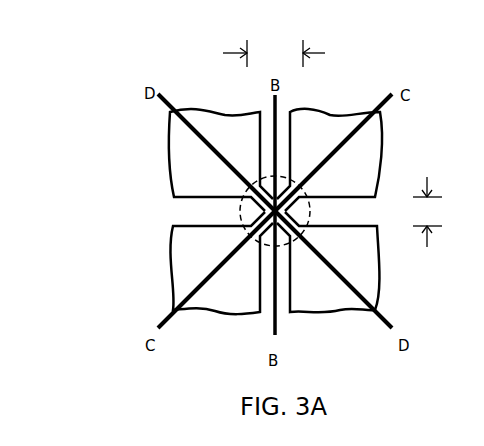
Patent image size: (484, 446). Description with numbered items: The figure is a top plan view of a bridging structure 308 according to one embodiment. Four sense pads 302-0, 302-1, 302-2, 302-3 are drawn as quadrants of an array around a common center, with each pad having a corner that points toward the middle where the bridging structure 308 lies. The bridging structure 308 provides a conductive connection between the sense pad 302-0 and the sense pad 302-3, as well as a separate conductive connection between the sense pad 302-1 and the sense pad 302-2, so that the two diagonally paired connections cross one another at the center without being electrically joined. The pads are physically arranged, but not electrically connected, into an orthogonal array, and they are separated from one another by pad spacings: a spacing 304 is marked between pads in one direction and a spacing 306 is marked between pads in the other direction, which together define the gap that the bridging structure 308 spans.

The sense pad 302-0 is at (202, 165).
The sense pad 302-1 is at (193, 266).
The sense pad 302-2 is at (320, 123).
The sense pad 302-3 is at (362, 245).
The gap height between regions 304 is at (427, 212).
The gap width between regions 306 is at (274, 53).
The bridging structure 308 is at (240, 217).